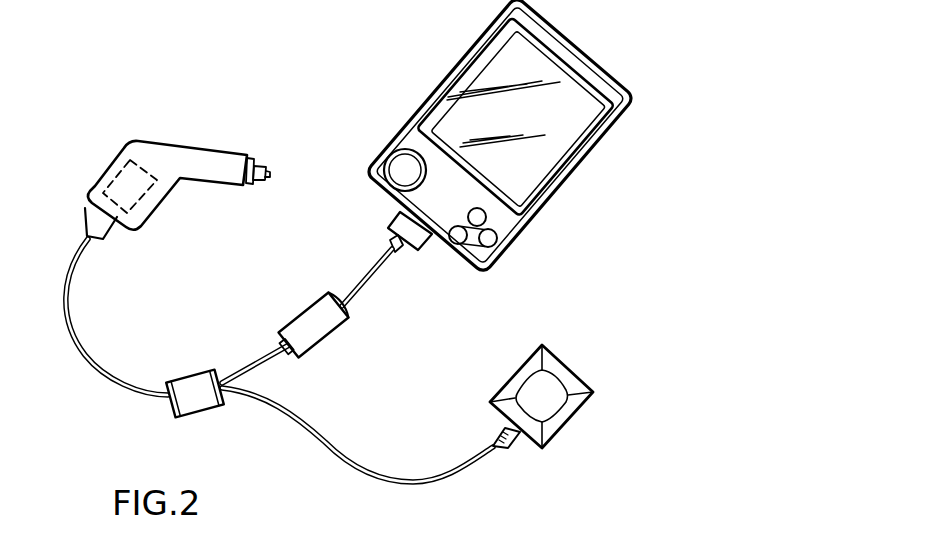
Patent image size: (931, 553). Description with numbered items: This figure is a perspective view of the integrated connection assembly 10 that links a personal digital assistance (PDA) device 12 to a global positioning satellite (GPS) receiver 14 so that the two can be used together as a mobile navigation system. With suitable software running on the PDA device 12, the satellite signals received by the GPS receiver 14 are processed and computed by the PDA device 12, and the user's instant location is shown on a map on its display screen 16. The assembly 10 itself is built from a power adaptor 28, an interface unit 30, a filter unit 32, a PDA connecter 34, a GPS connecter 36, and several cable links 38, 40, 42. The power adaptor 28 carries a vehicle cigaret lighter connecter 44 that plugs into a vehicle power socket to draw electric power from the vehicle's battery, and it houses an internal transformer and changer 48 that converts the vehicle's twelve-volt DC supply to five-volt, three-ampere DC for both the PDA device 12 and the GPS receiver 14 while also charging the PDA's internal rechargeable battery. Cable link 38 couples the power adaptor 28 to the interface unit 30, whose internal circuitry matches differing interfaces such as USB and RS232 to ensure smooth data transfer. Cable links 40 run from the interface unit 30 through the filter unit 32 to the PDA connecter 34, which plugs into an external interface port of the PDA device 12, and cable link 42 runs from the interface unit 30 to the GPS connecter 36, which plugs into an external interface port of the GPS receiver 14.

The integrated connection assembly 10 is at (670, 247).
The personal digital assistance (PDA) device 12 is at (607, 73).
The global positioning satellite (GPS) receiver 14 is at (578, 373).
The display screen 16 is at (498, 60).
The power adaptor 28 is at (165, 159).
The interface unit 30 is at (198, 405).
The filter unit 32 is at (311, 309).
The PDA connecter 34 is at (418, 237).
The GPS connecter 36 is at (72, 285).
The cable link 38 is at (507, 447).
The cable links 40 is at (366, 273).
The cable link 42 is at (357, 468).
The vehicle cigaret lighter connecter 44 is at (266, 162).
The internal transformer and changer 48 is at (92, 172).